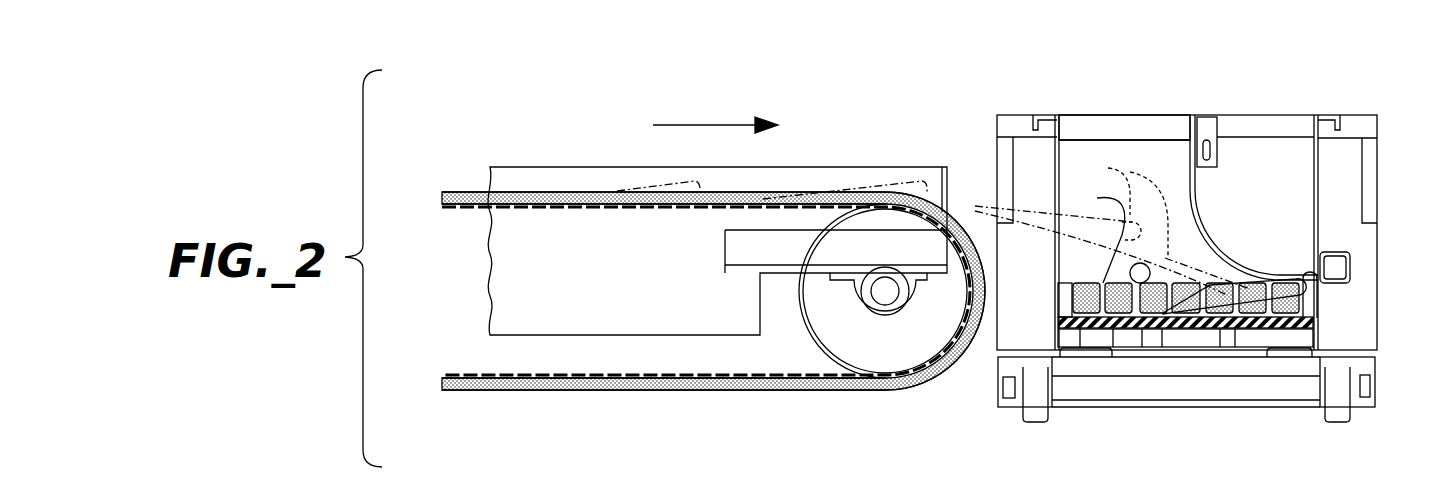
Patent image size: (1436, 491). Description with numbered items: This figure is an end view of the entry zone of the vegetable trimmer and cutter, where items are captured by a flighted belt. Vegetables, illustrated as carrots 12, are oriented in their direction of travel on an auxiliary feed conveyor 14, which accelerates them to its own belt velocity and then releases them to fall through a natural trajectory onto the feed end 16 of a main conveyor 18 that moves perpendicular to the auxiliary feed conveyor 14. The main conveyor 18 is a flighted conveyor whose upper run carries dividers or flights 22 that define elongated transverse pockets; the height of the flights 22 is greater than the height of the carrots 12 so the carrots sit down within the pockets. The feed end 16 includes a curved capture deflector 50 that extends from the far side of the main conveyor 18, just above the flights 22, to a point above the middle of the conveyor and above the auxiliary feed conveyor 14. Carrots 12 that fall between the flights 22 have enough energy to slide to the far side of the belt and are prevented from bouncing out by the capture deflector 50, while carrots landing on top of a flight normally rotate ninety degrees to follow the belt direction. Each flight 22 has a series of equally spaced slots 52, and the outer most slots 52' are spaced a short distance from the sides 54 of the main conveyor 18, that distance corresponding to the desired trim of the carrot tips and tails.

The carrots 12 is at (857, 190).
The auxiliary feed conveyor 14 is at (580, 146).
The feed end 16 is at (1312, 93).
The main conveyor 18 is at (1193, 340).
The dividers or flights 22 is at (1095, 235).
The curved capture deflector 50 is at (1187, 152).
The slots 52 is at (1177, 364).
The outer most slots 52' is at (1215, 275).
The sides 54 is at (1060, 320).